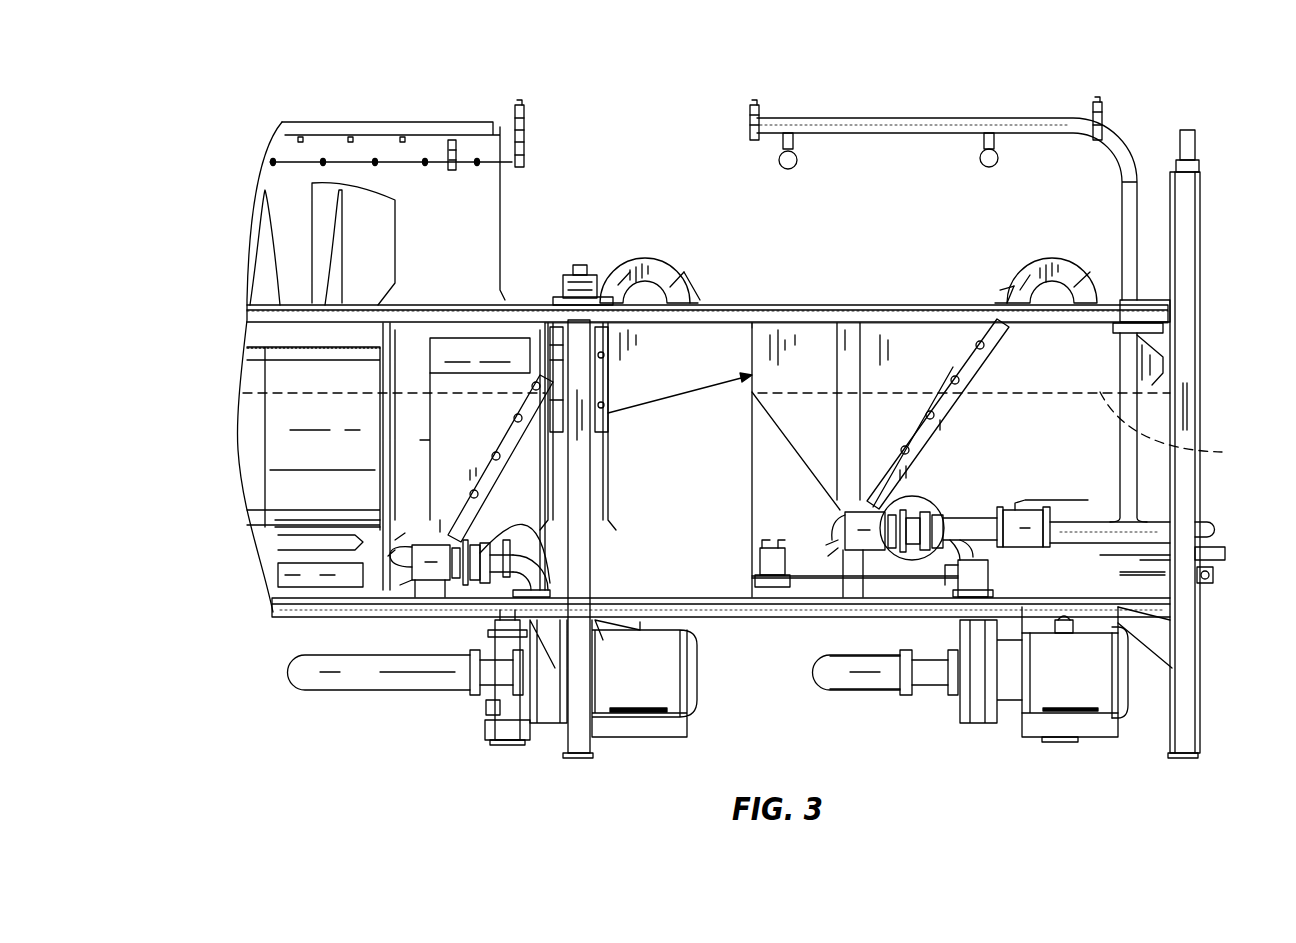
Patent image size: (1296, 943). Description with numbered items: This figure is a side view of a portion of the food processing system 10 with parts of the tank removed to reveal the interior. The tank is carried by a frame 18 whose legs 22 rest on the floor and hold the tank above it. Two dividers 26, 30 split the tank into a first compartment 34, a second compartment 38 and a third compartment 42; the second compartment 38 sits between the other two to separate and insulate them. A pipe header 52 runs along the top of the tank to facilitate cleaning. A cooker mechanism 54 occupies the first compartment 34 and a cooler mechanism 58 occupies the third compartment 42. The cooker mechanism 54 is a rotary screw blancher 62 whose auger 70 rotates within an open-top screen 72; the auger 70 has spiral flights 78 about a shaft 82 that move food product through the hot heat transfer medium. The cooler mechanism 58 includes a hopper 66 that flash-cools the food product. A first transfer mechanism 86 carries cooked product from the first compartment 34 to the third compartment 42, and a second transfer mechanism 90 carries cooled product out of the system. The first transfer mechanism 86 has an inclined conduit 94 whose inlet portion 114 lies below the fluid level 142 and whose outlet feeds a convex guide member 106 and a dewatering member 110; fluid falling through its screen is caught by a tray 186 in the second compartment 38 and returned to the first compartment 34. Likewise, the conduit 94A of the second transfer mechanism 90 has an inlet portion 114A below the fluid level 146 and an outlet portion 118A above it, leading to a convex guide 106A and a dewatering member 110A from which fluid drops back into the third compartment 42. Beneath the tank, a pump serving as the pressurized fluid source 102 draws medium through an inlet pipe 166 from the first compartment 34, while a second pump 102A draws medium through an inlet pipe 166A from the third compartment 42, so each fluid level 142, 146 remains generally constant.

The food processing system 10 is at (368, 72).
The frame 18 is at (753, 612).
The legs 22 is at (563, 735).
The divider 26 is at (492, 543).
The divider 30 is at (750, 537).
The first compartment 34 is at (472, 429).
The second compartment 38 is at (668, 504).
The third compartment 42 is at (1083, 451).
The pipe header 52 is at (870, 123).
The cooker mechanism 54 is at (220, 303).
The cooler mechanism 58 is at (826, 279).
The rotary screw blancher 62 is at (250, 452).
The hopper 66 is at (785, 343).
The auger 70 is at (258, 262).
The open-top screen 72 is at (292, 383).
The flights 78 is at (258, 218).
The shaft 82 is at (472, 348).
The first transfer mechanism 86 is at (617, 278).
The second transfer mechanism 90 is at (1025, 273).
The conduit 94 is at (493, 453).
The conduit 94A is at (948, 400).
The pressurized fluid source 102 is at (640, 683).
The pump 102A is at (1052, 683).
The convex guide member 106 is at (655, 267).
The convex guide 106A is at (1058, 263).
The dewatering member 110 is at (688, 297).
The dewatering member 110A is at (1143, 333).
The inlet portion 114 is at (423, 532).
The inlet portion 114A is at (873, 498).
The outlet portion 118A is at (1010, 298).
The fluid level 142 is at (277, 395).
The fluid level 146 is at (1179, 430).
The inlet pipe 166 is at (352, 670).
The inlet pipe 166A is at (845, 675).
The tray 186 is at (655, 373).